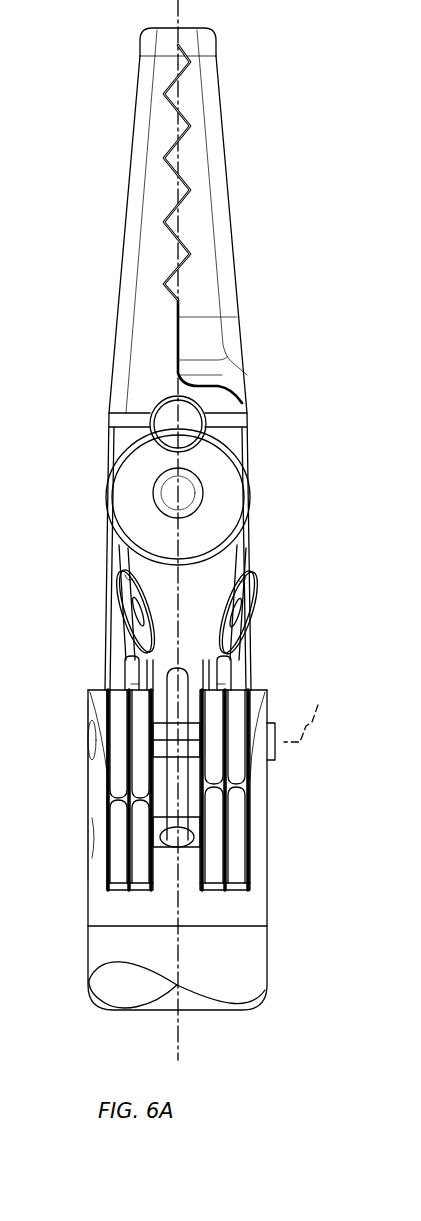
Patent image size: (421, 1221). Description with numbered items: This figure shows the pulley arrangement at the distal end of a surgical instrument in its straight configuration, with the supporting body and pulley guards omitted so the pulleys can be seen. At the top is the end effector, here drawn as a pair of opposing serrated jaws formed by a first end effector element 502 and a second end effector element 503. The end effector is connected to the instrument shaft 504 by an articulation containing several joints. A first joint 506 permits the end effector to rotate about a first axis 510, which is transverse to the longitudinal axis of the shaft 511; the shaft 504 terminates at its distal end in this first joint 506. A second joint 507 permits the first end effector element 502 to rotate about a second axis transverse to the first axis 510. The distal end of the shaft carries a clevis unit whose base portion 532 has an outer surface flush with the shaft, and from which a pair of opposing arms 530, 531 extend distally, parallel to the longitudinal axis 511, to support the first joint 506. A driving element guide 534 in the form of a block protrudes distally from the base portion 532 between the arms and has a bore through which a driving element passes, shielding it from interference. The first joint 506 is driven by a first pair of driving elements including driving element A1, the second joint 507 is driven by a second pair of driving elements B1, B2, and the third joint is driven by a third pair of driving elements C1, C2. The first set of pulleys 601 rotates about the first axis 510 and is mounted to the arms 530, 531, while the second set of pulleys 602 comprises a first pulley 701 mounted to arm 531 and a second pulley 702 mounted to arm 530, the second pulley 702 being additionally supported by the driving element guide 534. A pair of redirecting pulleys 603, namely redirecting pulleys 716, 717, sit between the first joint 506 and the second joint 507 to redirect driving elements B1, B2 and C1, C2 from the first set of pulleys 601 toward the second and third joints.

The first end effector element 502 is at (160, 204).
The second end effector element 503 is at (200, 136).
The instrument shaft 504 is at (262, 950).
The first joint 506 is at (272, 752).
The second joint 507 is at (195, 492).
The first axis 510 is at (315, 711).
The longitudinal axis of the shaft 511 is at (180, 1036).
The arm 530 is at (88, 788).
The arm 531 is at (270, 788).
The base portion 532 is at (102, 909).
The driving element guide 534 is at (167, 882).
The first set of pulleys 601 is at (78, 692).
The second set of pulleys 602 is at (78, 798).
The redirecting pulleys 603 is at (142, 600).
The first pulley of the second set 701 is at (260, 849).
The second pulley of the second set 702 is at (104, 864).
The redirecting pulley 716 is at (241, 576).
The redirecting pulley 717 is at (126, 579).
The driving element A1 is at (178, 666).
The driving element B1 is at (230, 648).
The driving element B2 is at (112, 553).
The driving element C1 is at (138, 682).
The driving element C2 is at (226, 678).